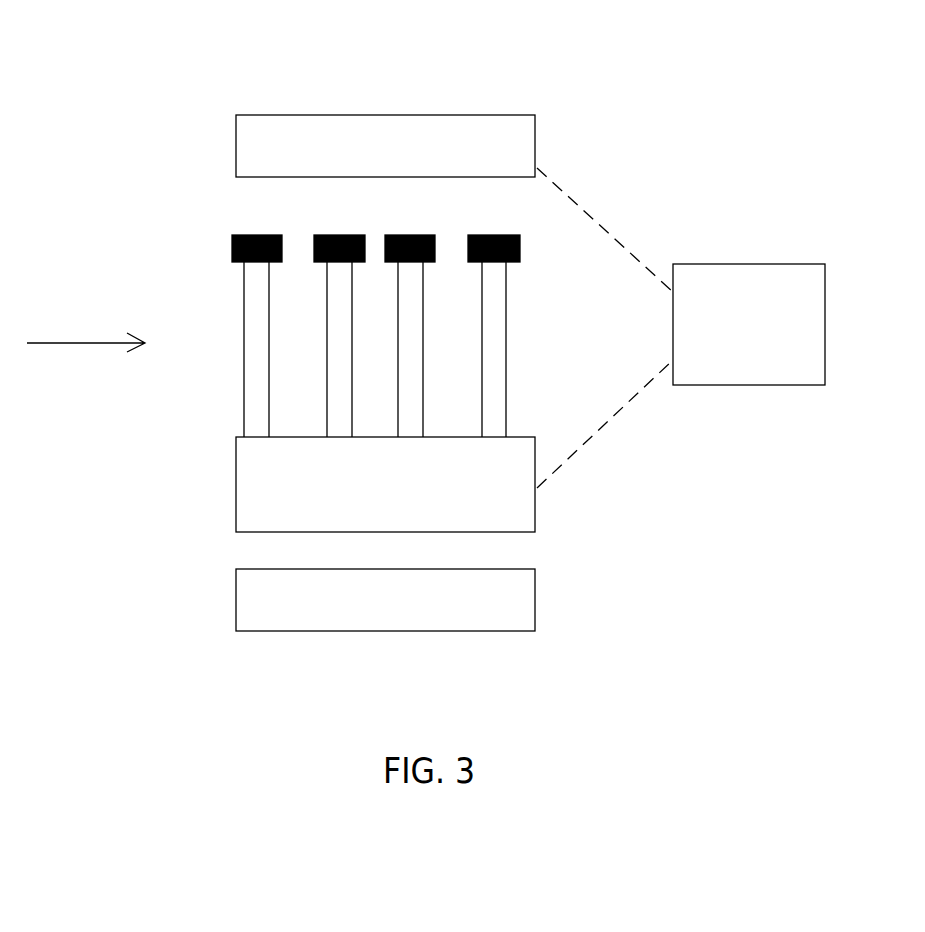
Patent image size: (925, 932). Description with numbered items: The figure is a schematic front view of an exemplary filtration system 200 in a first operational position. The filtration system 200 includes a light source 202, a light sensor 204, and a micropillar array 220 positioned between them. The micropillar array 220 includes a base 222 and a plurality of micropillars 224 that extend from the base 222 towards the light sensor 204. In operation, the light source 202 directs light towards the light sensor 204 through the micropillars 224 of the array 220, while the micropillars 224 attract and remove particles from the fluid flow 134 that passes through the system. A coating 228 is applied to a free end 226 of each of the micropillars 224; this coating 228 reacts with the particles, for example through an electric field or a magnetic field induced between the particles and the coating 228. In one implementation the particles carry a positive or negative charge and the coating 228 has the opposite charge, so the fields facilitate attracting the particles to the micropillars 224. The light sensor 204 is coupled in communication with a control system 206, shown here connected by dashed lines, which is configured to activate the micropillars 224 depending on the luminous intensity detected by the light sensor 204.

The filtration system 200 is at (138, 58).
The light source 202 is at (245, 610).
The light sensor 204 is at (236, 147).
The control system 206 is at (773, 264).
The micropillar array 220 is at (197, 451).
The base 222 is at (248, 507).
The micropillars 224 is at (250, 328).
The free end 226 is at (220, 249).
The coating 228 is at (252, 235).
The fluid flow 134 is at (87, 340).